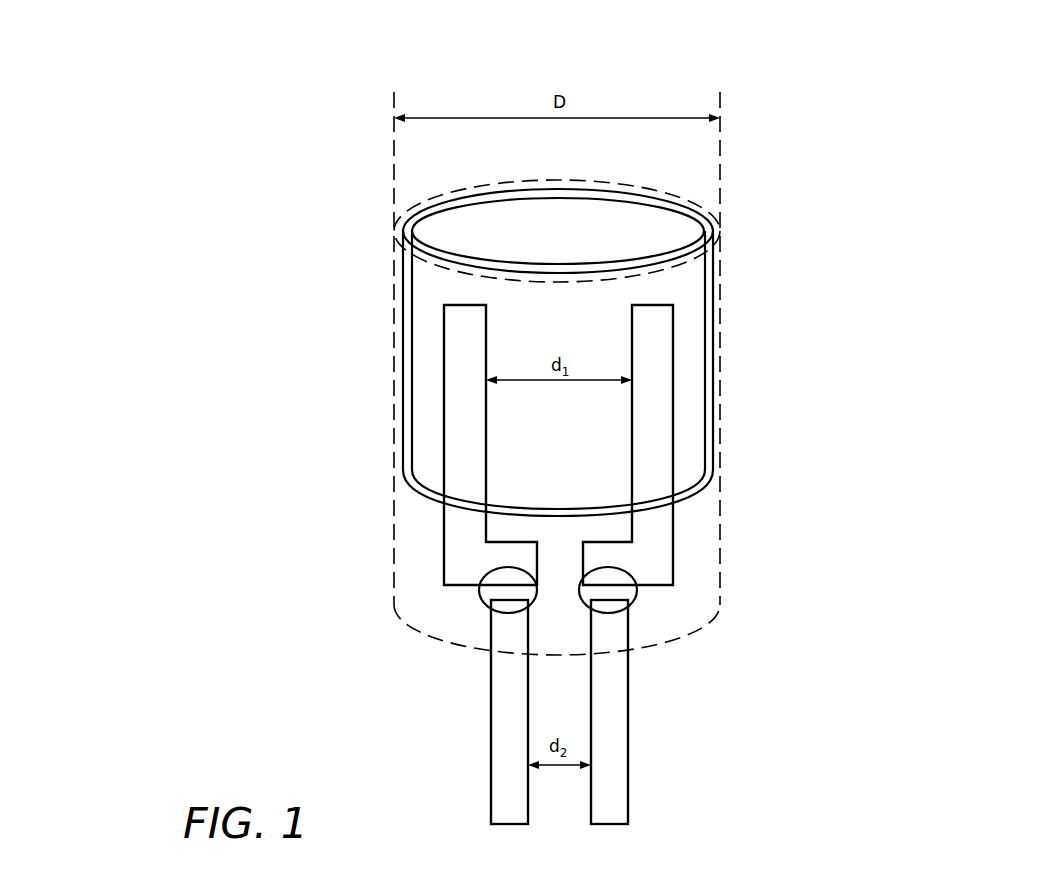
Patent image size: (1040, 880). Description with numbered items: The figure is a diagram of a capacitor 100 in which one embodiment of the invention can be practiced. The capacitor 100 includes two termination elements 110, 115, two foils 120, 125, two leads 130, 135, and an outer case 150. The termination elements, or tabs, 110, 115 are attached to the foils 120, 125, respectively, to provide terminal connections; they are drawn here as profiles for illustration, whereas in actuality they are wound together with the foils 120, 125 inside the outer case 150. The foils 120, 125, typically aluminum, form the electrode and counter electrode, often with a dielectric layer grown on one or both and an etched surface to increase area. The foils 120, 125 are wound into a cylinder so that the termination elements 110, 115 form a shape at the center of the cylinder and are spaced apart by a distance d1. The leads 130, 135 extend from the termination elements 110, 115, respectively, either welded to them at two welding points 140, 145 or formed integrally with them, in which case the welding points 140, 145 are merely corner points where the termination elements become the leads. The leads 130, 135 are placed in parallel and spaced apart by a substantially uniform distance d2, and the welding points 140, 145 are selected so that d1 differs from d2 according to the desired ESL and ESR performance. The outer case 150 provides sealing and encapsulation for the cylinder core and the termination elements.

The capacitor 100 is at (930, 90).
The termination element 110 is at (453, 349).
The termination element 115 is at (662, 348).
The foil 120 is at (428, 283).
The foil 125 is at (690, 287).
The lead 130 is at (500, 804).
The lead 135 is at (620, 805).
The welding point 140 is at (490, 592).
The welding point 145 is at (632, 593).
The outer case 150 is at (646, 190).